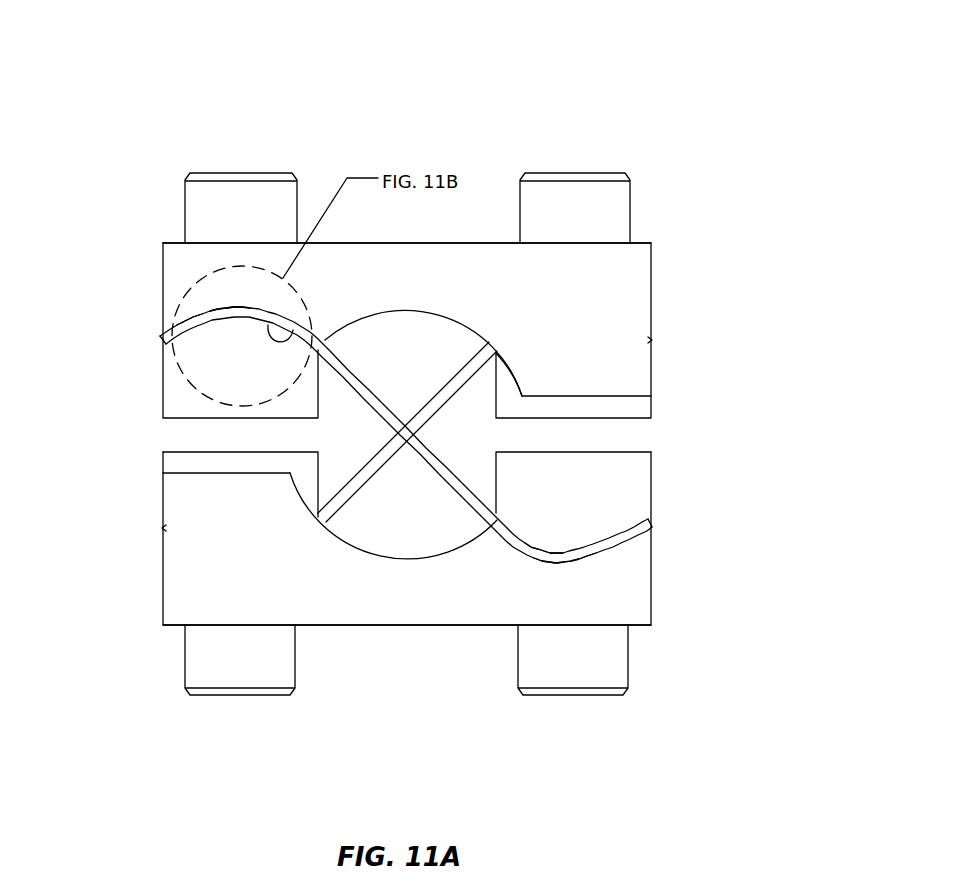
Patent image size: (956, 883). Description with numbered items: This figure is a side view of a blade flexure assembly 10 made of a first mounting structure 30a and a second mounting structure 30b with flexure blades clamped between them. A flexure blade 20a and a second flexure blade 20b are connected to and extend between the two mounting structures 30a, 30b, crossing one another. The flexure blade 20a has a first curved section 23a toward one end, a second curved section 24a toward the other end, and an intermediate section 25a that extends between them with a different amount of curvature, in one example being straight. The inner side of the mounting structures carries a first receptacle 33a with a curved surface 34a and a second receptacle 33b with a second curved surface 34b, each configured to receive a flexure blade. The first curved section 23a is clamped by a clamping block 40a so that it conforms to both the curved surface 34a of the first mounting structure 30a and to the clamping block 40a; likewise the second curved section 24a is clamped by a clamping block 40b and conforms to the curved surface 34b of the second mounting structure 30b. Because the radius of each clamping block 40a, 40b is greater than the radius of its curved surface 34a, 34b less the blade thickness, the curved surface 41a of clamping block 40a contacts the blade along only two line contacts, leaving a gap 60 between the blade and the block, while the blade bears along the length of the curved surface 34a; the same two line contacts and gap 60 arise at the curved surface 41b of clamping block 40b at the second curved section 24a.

The blade flexure assembly 10 is at (508, 93).
The flexure blade 20a is at (472, 505).
The flexure blade 20b is at (460, 390).
The first curved section 23a is at (228, 308).
The second curved section 24a is at (583, 563).
The intermediate section 25a is at (372, 398).
The first mounting structure 30a is at (617, 283).
The second mounting structure 30b is at (627, 587).
The first receptacle 33a is at (238, 294).
The second receptacle 33b is at (532, 571).
The curved surface 34a is at (200, 312).
The second curved surface 34b is at (548, 557).
The clamping block 40a is at (185, 402).
The clamping block 40b is at (633, 505).
The curved surface 41a is at (293, 345).
The curved surface 41b is at (543, 543).
The gap 60 is at (227, 323).